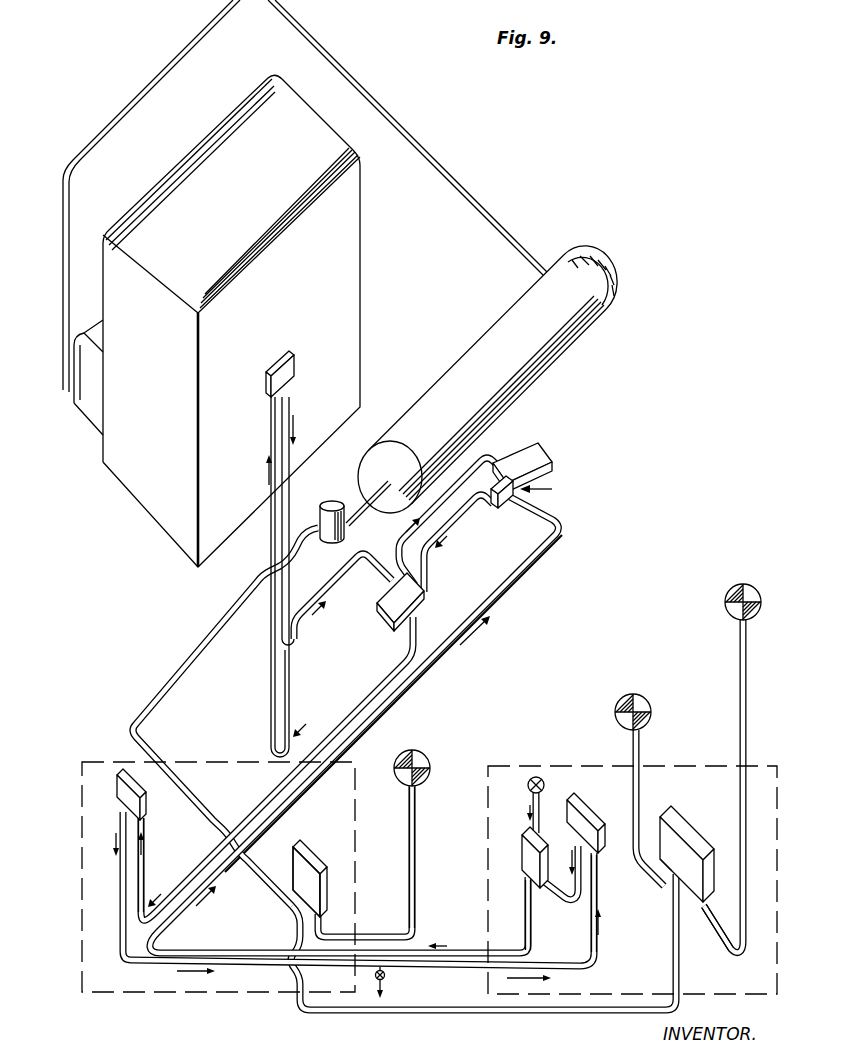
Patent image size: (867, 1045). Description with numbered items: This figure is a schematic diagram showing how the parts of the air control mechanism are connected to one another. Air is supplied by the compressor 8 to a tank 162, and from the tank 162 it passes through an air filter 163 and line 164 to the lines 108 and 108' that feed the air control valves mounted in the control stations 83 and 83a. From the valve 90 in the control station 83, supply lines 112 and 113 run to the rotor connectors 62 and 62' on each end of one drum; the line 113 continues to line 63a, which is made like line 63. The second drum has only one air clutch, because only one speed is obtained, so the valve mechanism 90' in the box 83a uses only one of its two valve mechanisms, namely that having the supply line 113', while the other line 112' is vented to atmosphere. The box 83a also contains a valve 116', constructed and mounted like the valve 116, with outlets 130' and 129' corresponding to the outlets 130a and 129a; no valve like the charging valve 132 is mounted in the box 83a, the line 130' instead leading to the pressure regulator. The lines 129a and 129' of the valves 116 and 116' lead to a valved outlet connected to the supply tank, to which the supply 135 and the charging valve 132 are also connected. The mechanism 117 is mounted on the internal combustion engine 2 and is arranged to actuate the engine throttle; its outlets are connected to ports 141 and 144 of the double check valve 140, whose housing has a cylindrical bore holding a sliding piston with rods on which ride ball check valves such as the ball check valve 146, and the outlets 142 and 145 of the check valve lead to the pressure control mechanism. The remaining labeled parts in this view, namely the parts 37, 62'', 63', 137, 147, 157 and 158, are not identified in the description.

The internal combustion engine 2 is at (165, 436).
The compressor 8 is at (87, 413).
The base plate 37 is at (431, 670).
The rotor connector 62 is at (633, 697).
The rotor connector 62' is at (719, 602).
The pressure gauge 62'' is at (431, 760).
The line 63 is at (656, 808).
The gauge line 63' is at (743, 786).
The line 63a is at (418, 817).
The control station 83 is at (487, 988).
The box 83a is at (168, 992).
The valve 90 is at (687, 854).
The valve mechanism 90' is at (311, 867).
The line 108 is at (368, 958).
The line 108' is at (578, 942).
The supply line 112 is at (289, 877).
The line 112' is at (662, 890).
The air line 113 is at (365, 861).
The supply line 113' is at (711, 937).
The valve 116 is at (589, 812).
The valve 116' is at (114, 794).
The mechanism 117 is at (265, 388).
The outlet 129' is at (341, 896).
The outlet 129a is at (589, 947).
The outlet 130' is at (160, 865).
The outlet 130a is at (577, 900).
The charging valve 132 is at (524, 857).
The supply 135 is at (530, 796).
The line 137 is at (522, 930).
The double check valve 140 is at (392, 988).
The port 141 is at (332, 600).
The outlet 142 is at (495, 458).
The port 144 is at (380, 670).
The outlet 145 is at (459, 516).
The ball check valve 146 is at (516, 486).
The connector block 147 is at (545, 447).
The flow direction 157 is at (554, 494).
The line 158 is at (516, 512).
The air tank 162 is at (500, 382).
The air filter 163 is at (340, 543).
The line 164 is at (210, 630).